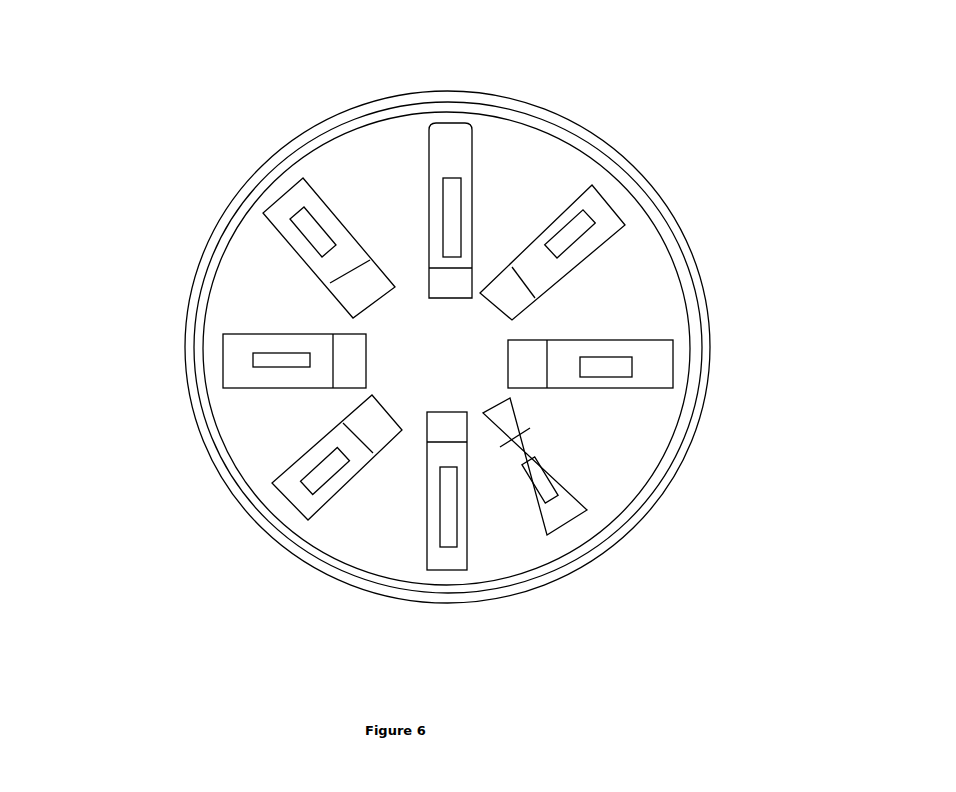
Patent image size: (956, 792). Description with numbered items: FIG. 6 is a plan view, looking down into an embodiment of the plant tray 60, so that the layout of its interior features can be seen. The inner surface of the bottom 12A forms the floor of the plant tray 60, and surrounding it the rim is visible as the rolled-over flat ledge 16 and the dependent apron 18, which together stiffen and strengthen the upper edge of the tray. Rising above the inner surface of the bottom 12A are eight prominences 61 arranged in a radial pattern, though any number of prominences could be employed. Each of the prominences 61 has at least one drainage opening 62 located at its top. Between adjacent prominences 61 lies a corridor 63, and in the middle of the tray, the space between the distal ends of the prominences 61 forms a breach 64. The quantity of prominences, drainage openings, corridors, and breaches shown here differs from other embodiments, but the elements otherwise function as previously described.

The plant tray 60 is at (168, 66).
The prominences 61 is at (438, 145).
The drainage opening 62 is at (453, 192).
The corridor 63 is at (387, 200).
The breach 64 is at (450, 354).
The dependent apron 18 is at (694, 238).
The flat ledge 16 is at (688, 277).
The inner surface of the bottom 12A is at (352, 177).